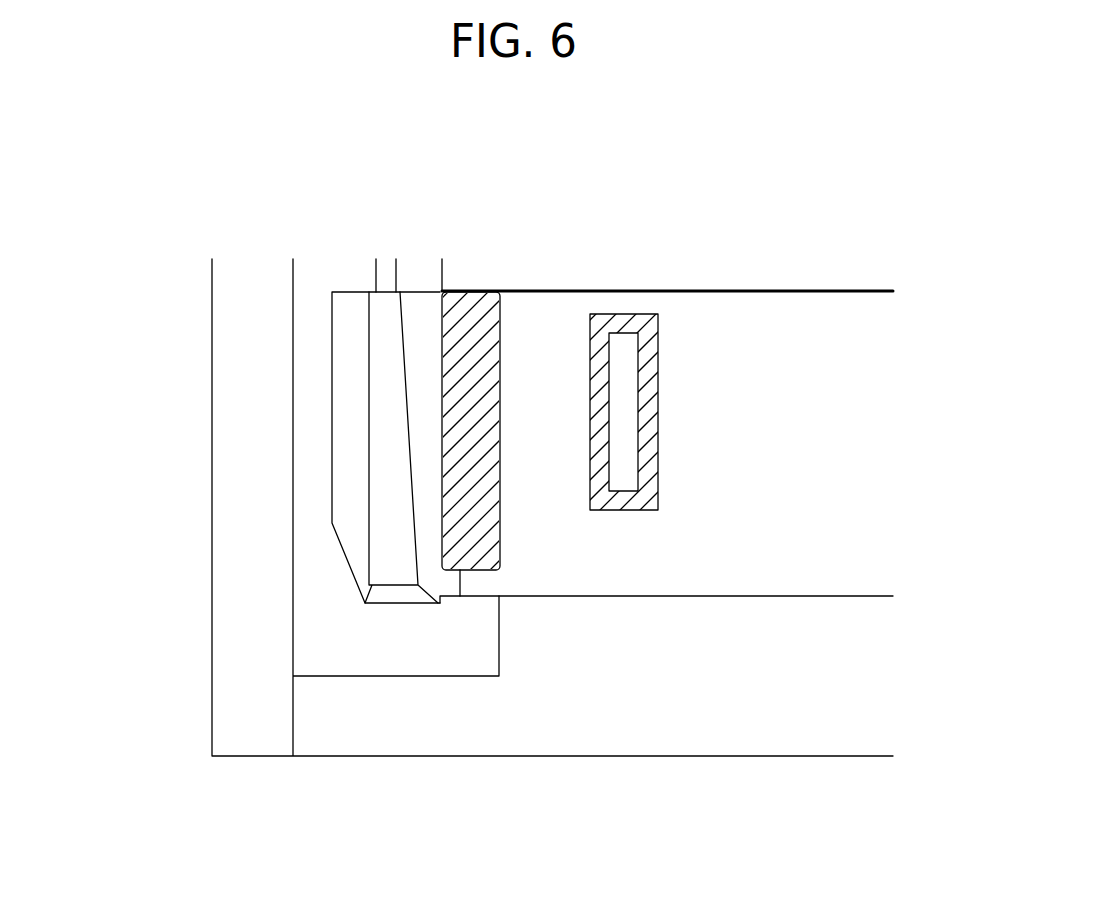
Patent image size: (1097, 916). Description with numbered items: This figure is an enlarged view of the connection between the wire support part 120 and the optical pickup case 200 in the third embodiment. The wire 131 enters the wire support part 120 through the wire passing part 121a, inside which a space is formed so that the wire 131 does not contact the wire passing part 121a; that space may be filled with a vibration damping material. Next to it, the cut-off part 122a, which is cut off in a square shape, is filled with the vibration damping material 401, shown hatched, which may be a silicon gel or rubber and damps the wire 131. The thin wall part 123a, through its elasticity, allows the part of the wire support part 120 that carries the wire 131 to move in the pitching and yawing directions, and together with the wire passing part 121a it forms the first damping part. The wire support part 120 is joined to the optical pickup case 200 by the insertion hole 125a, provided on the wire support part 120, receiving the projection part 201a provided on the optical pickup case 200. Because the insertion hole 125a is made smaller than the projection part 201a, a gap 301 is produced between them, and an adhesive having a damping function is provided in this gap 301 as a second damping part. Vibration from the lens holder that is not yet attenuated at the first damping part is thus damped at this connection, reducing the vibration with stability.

The wire support part 120 is at (825, 570).
The wire passing part 121a is at (355, 482).
The cut-off part 122a is at (482, 533).
The thin wall part 123a is at (480, 587).
The insertion hole 125a is at (600, 325).
The wire 131 is at (388, 267).
The optical pickup case 200 is at (377, 727).
The projection part 201a is at (622, 348).
The gap 301 is at (615, 500).
The vibration damping material 401 is at (472, 318).